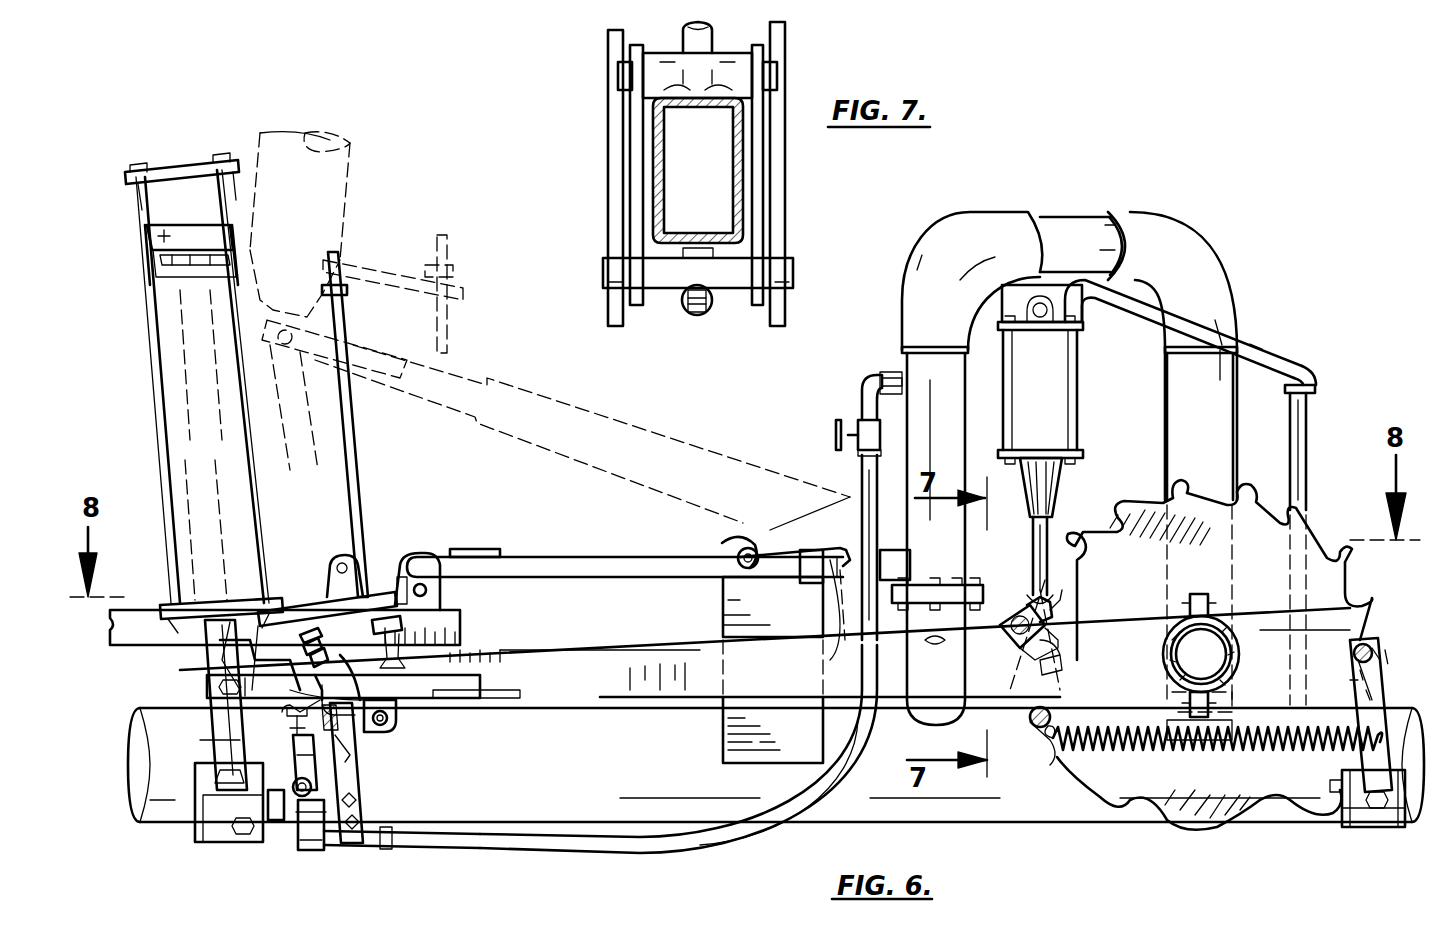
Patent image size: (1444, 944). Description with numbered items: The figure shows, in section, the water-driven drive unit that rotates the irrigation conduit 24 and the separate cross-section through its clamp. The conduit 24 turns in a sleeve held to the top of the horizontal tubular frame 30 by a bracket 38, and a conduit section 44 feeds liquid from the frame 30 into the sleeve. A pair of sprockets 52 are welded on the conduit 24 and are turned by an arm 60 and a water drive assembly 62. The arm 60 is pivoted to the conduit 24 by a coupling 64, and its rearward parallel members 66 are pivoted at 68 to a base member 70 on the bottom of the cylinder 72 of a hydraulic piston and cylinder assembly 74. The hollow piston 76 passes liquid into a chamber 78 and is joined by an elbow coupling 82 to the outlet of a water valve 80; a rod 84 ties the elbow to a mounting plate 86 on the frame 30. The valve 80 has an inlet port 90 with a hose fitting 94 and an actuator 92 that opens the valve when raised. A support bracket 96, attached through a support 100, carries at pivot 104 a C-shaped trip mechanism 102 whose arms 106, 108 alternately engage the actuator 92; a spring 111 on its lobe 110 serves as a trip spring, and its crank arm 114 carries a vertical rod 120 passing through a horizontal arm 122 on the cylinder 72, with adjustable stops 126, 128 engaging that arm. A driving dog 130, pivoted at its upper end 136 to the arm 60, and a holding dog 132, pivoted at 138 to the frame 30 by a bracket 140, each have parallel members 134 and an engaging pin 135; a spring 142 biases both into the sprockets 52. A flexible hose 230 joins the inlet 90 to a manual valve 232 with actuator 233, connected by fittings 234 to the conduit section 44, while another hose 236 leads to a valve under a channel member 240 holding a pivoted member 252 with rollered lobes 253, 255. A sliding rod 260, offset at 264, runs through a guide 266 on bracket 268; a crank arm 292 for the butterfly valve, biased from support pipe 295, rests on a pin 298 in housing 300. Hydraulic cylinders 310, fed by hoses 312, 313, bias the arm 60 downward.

In FIG. 6, the conduit 24 is at (1240, 660).
In FIG. 6, the tubular frame 30 is at (135, 773).
In FIG. 6, the bracket 38 is at (1245, 710).
In FIG. 6, the conduit section 44 is at (997, 196).
In FIG. 7, the sprockets 52 is at (613, 150).
In FIG. 6, the sprockets 52 is at (1345, 583).
In FIG. 7, the arm 60 is at (740, 180).
In FIG. 6, the arm 60 is at (660, 432).
In FIG. 6, the water drive assembly 62 is at (276, 888).
In FIG. 6, the coupling 64 is at (1238, 645).
In FIG. 6, the parallel members 66 is at (532, 660).
In FIG. 6, the pivot 68 is at (218, 687).
In FIG. 6, the base member 70 is at (222, 738).
In FIG. 6, the cylinder 72 is at (165, 440).
In FIG. 6, the hydraulic piston and cylinder assembly 74 is at (353, 185).
In FIG. 6, the piston 76 is at (158, 262).
In FIG. 6, the chamber 78 is at (150, 240).
In FIG. 6, the water valve 80 is at (296, 815).
In FIG. 6, the elbow coupling 82 is at (205, 820).
In FIG. 6, the rod 84 is at (232, 840).
In FIG. 6, the mounting plate 86 is at (205, 822).
In FIG. 6, the liquid inlet port 90 is at (328, 850).
In FIG. 6, the actuator 92 is at (292, 710).
In FIG. 6, the hose fitting 94 is at (357, 850).
In FIG. 6, the support bracket 96 is at (358, 780).
In FIG. 6, the support 100 is at (360, 765).
In FIG. 6, the trip mechanism 102 is at (363, 728).
In FIG. 6, the pivot 104 is at (362, 690).
In FIG. 6, the arm 106 is at (304, 658).
In FIG. 6, the arm 108 is at (290, 724).
In FIG. 6, the lobe 110 is at (362, 734).
In FIG. 6, the spring 111 is at (315, 755).
In FIG. 6, the crank arm 114 is at (396, 720).
In FIG. 6, the rod 120 is at (352, 440).
In FIG. 6, the arm 122 is at (295, 615).
In FIG. 6, the adjustable stop 126 is at (382, 590).
In FIG. 6, the adjustable stop 128 is at (346, 292).
In FIG. 7, the driving dog 130 is at (811, 201).
In FIG. 6, the driving dog 130 is at (1010, 700).
In FIG. 6, the holding dog 132 is at (1393, 688).
In FIG. 7, the parallel members 134 is at (631, 215).
In FIG. 6, the parallel members 134 is at (1035, 603).
In FIG. 7, the engaging pin 135 is at (667, 278).
In FIG. 6, the engaging pin 135 is at (1035, 728).
In FIG. 7, the upper end 136 is at (777, 75).
In FIG. 6, the upper end 136 is at (1043, 625).
In FIG. 6, the pivot 138 is at (1375, 812).
In FIG. 6, the bracket 140 is at (1344, 812).
In FIG. 7, the spring 142 is at (697, 315).
In FIG. 6, the spring 142 is at (1158, 752).
In FIG. 6, the flexible hose 230 is at (635, 860).
In FIG. 6, the valve 232 is at (858, 425).
In FIG. 6, the actuator 233 is at (836, 436).
In FIG. 6, the conduit and fittings 234 is at (862, 380).
In FIG. 6, the hose 236 is at (832, 598).
In FIG. 6, the channel member 240 is at (462, 620).
In FIG. 6, the member 252 is at (385, 553).
In FIG. 6, the lobe 253 is at (342, 555).
In FIG. 6, the lobe 255 is at (428, 590).
In FIG. 6, the rod 260 is at (560, 566).
In FIG. 6, the offset 264 is at (488, 548).
In FIG. 6, the guide 266 is at (817, 553).
In FIG. 6, the bracket 268 is at (733, 603).
In FIG. 6, the crank arm 292 is at (788, 545).
In FIG. 6, the support pipe 295 is at (1070, 483).
In FIG. 6, the pin 298 is at (722, 543).
In FIG. 6, the cylindrical housing 300 is at (748, 548).
In FIG. 7, the hydraulic cylinder 310 is at (683, 30).
In FIG. 6, the hydraulic cylinder 310 is at (1062, 392).
In FIG. 6, the hose 312 is at (1307, 440).
In FIG. 6, the hose 313 is at (1262, 345).